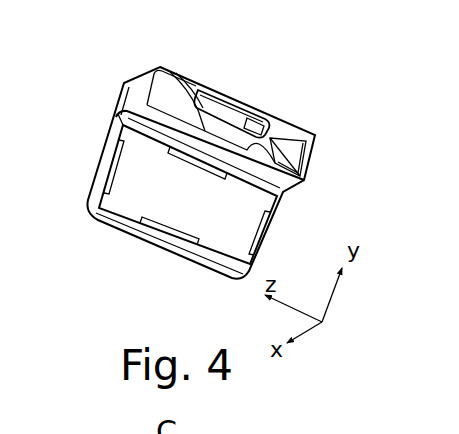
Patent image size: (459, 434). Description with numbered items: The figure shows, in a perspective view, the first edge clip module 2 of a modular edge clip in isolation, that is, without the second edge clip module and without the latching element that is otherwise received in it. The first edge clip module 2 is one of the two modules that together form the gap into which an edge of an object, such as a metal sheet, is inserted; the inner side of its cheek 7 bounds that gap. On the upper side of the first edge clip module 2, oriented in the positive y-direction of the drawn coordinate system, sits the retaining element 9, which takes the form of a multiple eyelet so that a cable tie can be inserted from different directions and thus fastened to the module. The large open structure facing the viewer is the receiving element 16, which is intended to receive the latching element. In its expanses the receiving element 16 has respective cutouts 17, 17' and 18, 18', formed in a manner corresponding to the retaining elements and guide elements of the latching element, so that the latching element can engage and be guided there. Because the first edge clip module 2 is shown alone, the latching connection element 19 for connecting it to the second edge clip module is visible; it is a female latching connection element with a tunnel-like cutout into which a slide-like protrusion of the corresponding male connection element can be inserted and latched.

The first edge clip module 2 is at (121, 80).
The retaining element 9 is at (232, 82).
The latching connection element 19 is at (312, 137).
The receiving element 16 is at (115, 127).
The cutout 17 is at (72, 159).
The cutout 17' is at (304, 233).
The cheek 7 is at (105, 220).
The cutout 18 is at (154, 270).
The cutout 18' is at (197, 237).